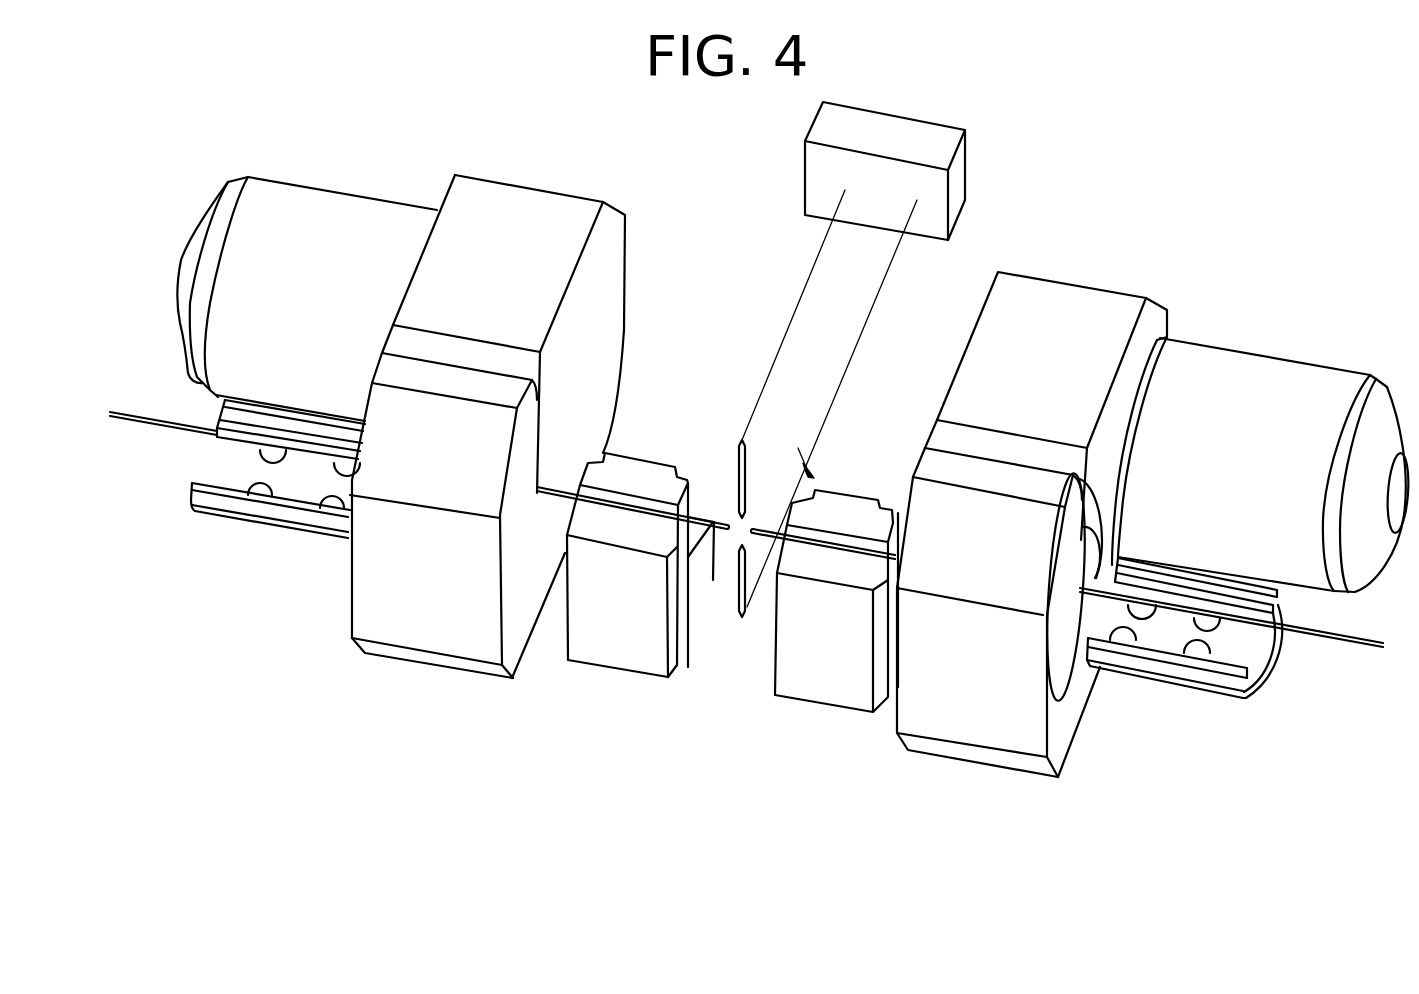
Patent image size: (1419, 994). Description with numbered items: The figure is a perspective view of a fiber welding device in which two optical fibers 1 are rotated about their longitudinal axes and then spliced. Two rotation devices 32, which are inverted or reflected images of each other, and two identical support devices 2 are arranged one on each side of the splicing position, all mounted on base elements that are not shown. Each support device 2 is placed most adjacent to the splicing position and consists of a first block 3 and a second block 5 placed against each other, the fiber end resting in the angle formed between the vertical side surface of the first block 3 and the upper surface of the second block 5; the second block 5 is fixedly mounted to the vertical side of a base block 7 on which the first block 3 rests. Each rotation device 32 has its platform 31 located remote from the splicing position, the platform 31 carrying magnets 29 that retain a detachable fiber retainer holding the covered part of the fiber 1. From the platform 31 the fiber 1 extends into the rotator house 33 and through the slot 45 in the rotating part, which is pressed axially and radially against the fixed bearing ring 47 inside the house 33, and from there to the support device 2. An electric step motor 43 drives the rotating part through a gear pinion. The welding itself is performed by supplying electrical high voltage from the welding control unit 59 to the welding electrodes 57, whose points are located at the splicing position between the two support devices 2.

The fiber 1 is at (843, 554).
The support or retaining and guiding device 2 is at (798, 451).
The first block 3 is at (828, 512).
The second block 5 is at (813, 591).
The base block 7 is at (687, 615).
The magnets 29 is at (1205, 617).
The platform 31 is at (1255, 685).
The rotation device 32 is at (1154, 500).
The rotator house 33 is at (1017, 298).
The electric step motor 43 is at (1230, 362).
The slot 45 is at (1088, 560).
The bearing ring 47 is at (1095, 512).
The welding electrodes 57 is at (737, 470).
The welding control unit 59 is at (958, 178).